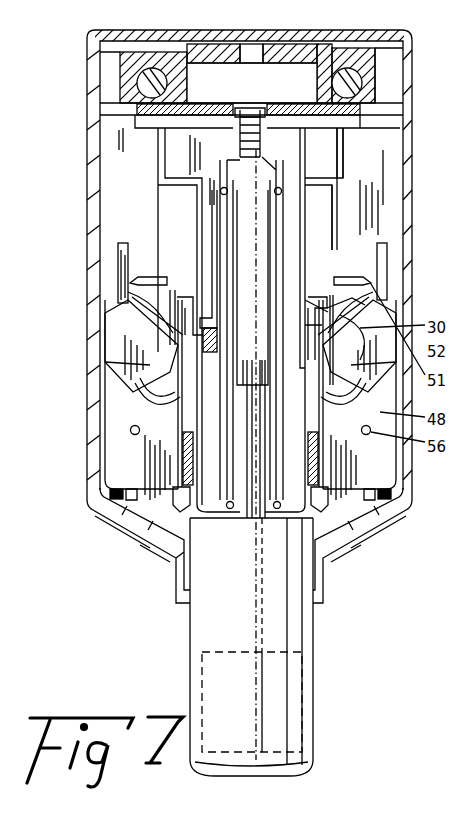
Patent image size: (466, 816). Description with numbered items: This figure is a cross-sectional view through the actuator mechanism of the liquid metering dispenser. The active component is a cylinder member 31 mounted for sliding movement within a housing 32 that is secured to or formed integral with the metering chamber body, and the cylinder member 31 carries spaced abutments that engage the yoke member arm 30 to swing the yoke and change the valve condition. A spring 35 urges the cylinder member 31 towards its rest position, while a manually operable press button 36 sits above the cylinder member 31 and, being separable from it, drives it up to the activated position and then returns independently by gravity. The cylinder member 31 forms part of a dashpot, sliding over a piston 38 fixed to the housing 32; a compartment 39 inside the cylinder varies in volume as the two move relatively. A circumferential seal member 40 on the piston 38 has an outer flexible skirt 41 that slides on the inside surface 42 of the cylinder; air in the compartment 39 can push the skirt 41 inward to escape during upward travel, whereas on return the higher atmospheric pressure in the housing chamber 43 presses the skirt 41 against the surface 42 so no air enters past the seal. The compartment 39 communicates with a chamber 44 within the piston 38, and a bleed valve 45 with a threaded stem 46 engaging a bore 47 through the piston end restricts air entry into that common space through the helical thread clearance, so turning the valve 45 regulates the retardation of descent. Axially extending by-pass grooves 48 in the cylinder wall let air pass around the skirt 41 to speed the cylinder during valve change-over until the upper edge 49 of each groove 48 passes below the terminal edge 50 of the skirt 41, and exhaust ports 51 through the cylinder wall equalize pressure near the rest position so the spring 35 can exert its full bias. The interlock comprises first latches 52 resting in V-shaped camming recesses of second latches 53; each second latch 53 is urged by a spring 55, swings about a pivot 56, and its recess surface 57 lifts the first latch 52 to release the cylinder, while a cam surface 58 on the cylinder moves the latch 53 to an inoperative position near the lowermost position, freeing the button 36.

The yoke member arm 30 is at (150, 325).
The cylinder member 31 is at (320, 316).
The housing 32 is at (155, 550).
The spring 35 is at (165, 473).
The press button 36 is at (280, 630).
The piston 38 is at (300, 240).
The compartment 39 is at (205, 444).
The seal member 40 is at (288, 455).
The flexible skirt 41 is at (392, 394).
The inside surface 42 is at (150, 378).
The housing chamber 43 is at (320, 220).
The chamber 44 is at (250, 236).
The bleed valve 45 is at (158, 140).
The threaded stem 46 is at (240, 150).
The bore 47 is at (223, 177).
The by-pass groove 48 is at (180, 413).
The upper edge 49 is at (330, 455).
The terminal edge 50 is at (190, 272).
The exhaust port 51 is at (130, 284).
The first latch 52 is at (120, 338).
The second latch 53 is at (130, 533).
The spring 55 is at (97, 515).
The pivot 56 is at (130, 431).
The surface 57 is at (160, 414).
The cam surface 58 is at (337, 537).